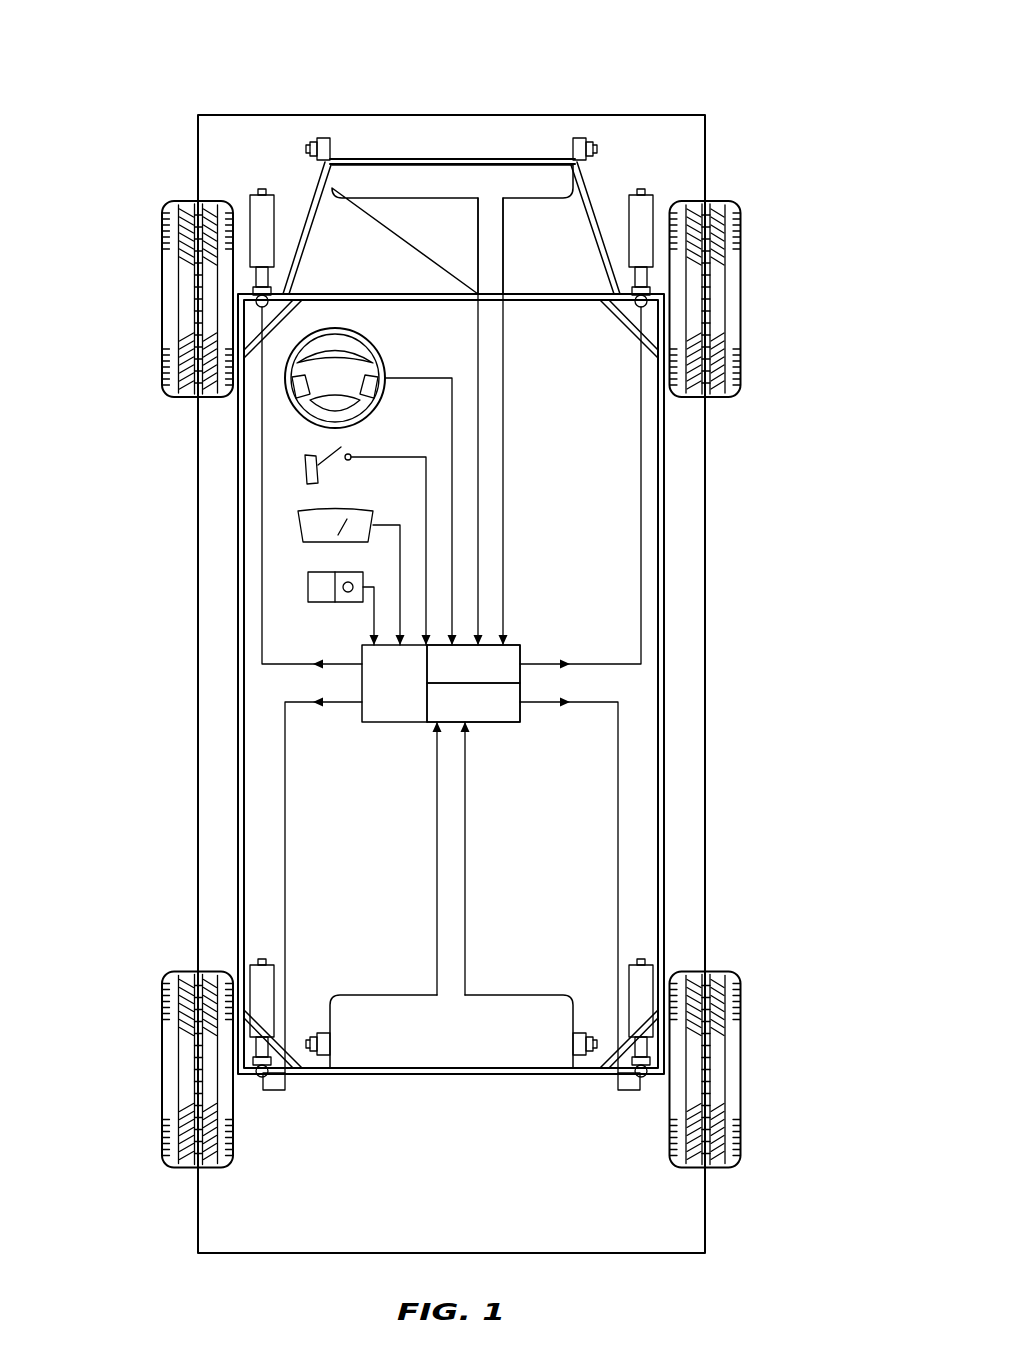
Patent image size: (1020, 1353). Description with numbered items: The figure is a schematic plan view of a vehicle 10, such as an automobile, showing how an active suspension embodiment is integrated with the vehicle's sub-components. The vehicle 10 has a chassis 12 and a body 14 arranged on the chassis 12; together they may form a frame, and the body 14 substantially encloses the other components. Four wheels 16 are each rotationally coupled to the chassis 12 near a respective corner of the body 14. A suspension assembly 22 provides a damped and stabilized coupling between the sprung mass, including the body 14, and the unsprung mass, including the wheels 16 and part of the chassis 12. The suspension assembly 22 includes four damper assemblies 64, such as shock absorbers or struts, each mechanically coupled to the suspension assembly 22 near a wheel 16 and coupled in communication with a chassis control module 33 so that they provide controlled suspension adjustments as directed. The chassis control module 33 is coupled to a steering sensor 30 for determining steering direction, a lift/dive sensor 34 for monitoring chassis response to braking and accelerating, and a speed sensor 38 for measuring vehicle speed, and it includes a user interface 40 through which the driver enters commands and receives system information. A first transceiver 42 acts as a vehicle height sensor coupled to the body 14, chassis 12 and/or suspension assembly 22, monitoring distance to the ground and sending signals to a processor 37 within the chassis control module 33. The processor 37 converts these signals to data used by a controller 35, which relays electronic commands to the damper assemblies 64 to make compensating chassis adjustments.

The vehicle 10 is at (728, 35).
The chassis 12 is at (664, 610).
The body 14 is at (198, 917).
The wheels 16 is at (162, 262).
The suspension assembly 22 is at (293, 315).
The steering sensor 30 is at (385, 358).
The chassis control module 33 is at (386, 743).
The lift/dive sensor 34 is at (305, 465).
The controller 35 is at (520, 717).
The processor 37 is at (520, 650).
The speed sensor 38 is at (298, 525).
The user interface 40 is at (308, 588).
The first transceiver 42 is at (318, 137).
The damper assembly 64 is at (260, 290).